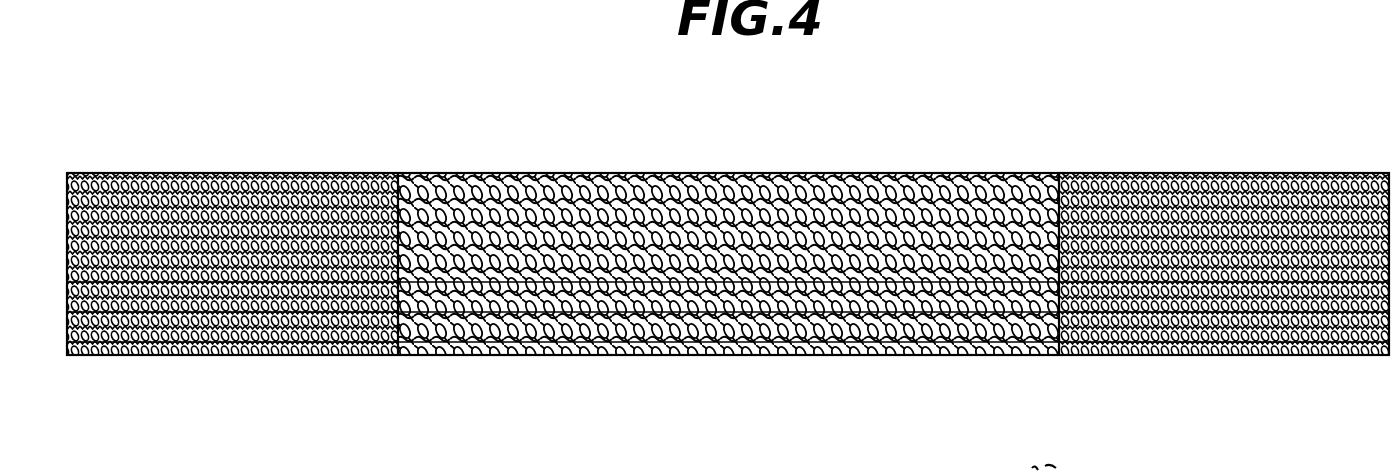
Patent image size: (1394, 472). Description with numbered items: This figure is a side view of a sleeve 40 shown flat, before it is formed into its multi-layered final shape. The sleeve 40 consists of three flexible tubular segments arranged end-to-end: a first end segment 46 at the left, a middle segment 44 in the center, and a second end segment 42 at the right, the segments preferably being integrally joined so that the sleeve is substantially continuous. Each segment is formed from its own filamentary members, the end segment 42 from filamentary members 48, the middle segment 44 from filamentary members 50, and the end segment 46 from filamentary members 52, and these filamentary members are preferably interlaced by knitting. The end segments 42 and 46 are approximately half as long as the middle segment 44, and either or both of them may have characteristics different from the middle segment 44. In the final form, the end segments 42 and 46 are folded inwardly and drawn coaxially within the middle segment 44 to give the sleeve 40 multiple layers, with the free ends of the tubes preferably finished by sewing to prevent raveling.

The sleeve 40 is at (343, 110).
The end tubular segment 42 is at (1293, 177).
The middle tubular segment 44 is at (580, 173).
The end tubular segment 46 is at (207, 173).
The filamentary members 48 is at (1280, 328).
The filamentary members 50 is at (738, 322).
The filamentary members 52 is at (277, 323).